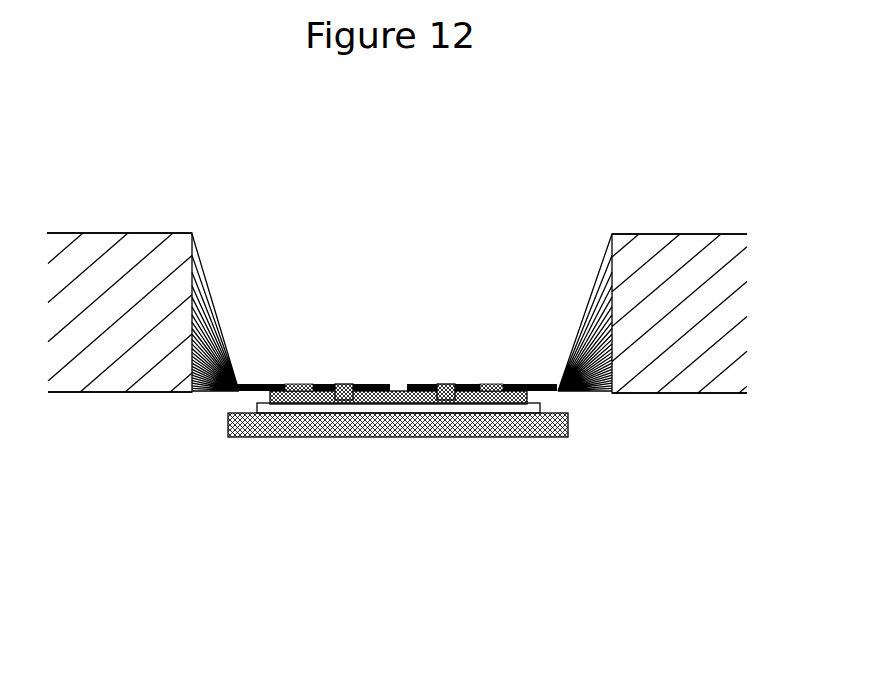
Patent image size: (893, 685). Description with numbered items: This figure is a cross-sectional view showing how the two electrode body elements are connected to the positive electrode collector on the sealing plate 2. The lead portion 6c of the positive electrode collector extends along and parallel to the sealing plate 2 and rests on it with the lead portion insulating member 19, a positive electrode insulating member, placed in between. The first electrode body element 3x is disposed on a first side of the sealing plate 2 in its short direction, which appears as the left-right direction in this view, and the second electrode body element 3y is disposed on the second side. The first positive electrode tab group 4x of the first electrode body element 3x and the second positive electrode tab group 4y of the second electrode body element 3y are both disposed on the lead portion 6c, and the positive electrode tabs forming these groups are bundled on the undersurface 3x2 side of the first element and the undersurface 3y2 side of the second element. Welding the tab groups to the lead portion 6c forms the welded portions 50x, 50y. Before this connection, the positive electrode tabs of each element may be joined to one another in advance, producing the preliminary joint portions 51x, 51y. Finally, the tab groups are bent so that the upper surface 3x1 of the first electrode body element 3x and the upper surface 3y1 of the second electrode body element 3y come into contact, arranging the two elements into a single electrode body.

The sealing plate 2 is at (277, 432).
The lead portion 6c is at (398, 404).
The lead portion insulating member 19 is at (494, 405).
The first electrode body element 3x is at (70, 347).
The upper surface of the first electrode body element 3x1 is at (138, 233).
The undersurface of the first electrode body element 3x2 is at (150, 392).
The second electrode body element 3y is at (687, 353).
The upper surface of the second electrode body element 3y1 is at (700, 235).
The undersurface of the second electrode body element 3y2 is at (640, 393).
The first positive electrode tab group 4x is at (327, 385).
The second positive electrode tab group 4y is at (468, 384).
The welded portion 50x is at (348, 385).
The welded portion 50y is at (448, 384).
The preliminary joint portion 51x is at (295, 385).
The preliminary joint portion 51y is at (495, 384).